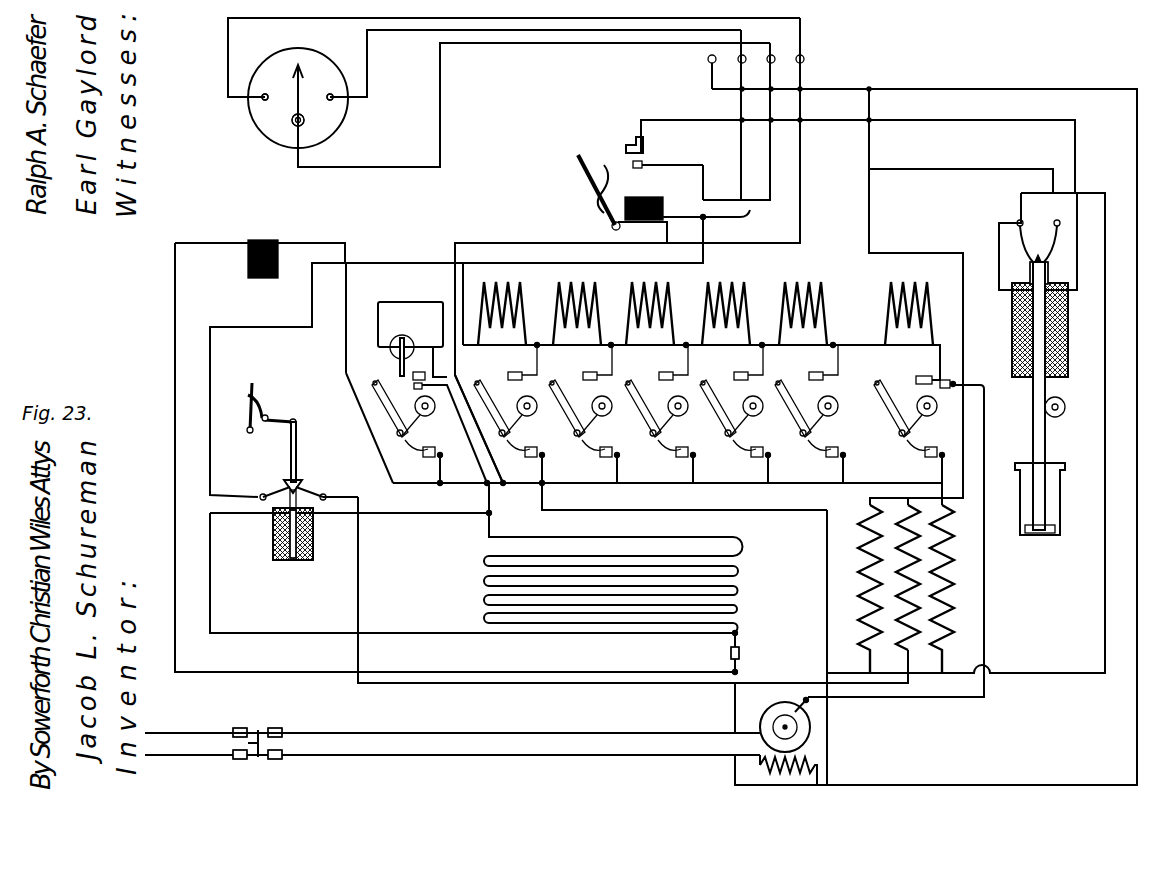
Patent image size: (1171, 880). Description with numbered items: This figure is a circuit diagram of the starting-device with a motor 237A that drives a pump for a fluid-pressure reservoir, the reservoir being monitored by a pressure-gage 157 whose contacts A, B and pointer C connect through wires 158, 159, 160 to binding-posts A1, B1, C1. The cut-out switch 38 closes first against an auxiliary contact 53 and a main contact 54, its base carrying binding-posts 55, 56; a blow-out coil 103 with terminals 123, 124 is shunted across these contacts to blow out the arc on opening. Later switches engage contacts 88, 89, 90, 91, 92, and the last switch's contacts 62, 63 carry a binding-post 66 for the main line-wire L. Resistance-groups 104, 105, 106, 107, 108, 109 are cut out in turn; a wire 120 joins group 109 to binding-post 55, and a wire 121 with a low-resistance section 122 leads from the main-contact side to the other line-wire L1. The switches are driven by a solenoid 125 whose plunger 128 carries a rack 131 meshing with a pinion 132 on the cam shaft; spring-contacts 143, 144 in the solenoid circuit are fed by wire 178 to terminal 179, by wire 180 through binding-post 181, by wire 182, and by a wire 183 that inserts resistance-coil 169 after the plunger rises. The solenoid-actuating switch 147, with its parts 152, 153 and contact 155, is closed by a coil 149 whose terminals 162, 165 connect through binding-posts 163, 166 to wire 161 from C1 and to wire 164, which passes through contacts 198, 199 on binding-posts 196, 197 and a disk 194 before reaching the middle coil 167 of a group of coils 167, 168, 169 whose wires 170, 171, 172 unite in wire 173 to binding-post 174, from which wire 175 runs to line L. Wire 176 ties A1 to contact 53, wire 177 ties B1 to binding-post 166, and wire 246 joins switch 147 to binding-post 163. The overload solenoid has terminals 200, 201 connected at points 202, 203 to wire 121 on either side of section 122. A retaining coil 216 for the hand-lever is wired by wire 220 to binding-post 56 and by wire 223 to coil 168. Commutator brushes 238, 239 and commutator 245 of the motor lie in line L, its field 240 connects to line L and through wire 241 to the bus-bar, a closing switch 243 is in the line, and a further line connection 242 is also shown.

The switch 38 is at (404, 424).
The auxiliary contact 53 is at (412, 376).
The main contact 54 is at (413, 385).
The binding-post 55 is at (443, 460).
The binding-post 56 is at (644, 385).
The contact 62 is at (905, 415).
The contact 63 is at (922, 376).
The binding-post 66 is at (952, 386).
The contact 88 is at (528, 374).
The contact 89 is at (602, 374).
The contact 90 is at (677, 374).
The contact 91 is at (752, 374).
The contact 92 is at (826, 375).
The blow-out coil 103 is at (400, 340).
The resistance-group 104 is at (893, 284).
The resistance-group 105 is at (795, 285).
The resistance-group 106 is at (722, 278).
The resistance-group 107 is at (648, 278).
The resistance-group 108 is at (575, 278).
The resistance-group 109 is at (497, 284).
The wire 120 is at (487, 420).
The wire 121 is at (466, 385).
The section 122 is at (645, 557).
The terminal 123 is at (433, 350).
The terminal 124 is at (425, 300).
The solenoid 125 is at (1069, 345).
The plunger 128 is at (1034, 418).
The rack 131 is at (1050, 440).
The pinion 132 is at (1064, 404).
The spring-contact 143 is at (1030, 230).
The spring-contact 144 is at (1052, 240).
The solenoid-actuating switch 147 is at (620, 189).
The magnet-coil 149 is at (645, 222).
The lever 152 is at (584, 150).
The contact 153 is at (643, 147).
The contact 155 is at (642, 165).
The pressure-gage 157 is at (288, 108).
The wire 158 is at (495, 20).
The wire 159 is at (420, 33).
The wire 160 is at (566, 46).
The wire 161 is at (771, 162).
The terminal 162 is at (703, 185).
The binding-post 163 is at (741, 195).
The wire 164 is at (708, 234).
The terminal 165 is at (692, 225).
The binding-post 166 is at (745, 211).
The resistance-coil 167 is at (938, 672).
The resistance-coil 168 is at (862, 592).
The resistance-coil 169 is at (952, 590).
The wire 170 is at (906, 512).
The wire 171 is at (872, 512).
The wire 172 is at (964, 501).
The wire 173 is at (870, 222).
The binding-post 174 is at (708, 64).
The wire 175 is at (980, 89).
The wire 176 is at (802, 192).
The wire 177 is at (741, 140).
The wire 178 is at (937, 114).
The terminal 179 is at (1060, 290).
The wire 180 is at (1000, 270).
The binding-post 181 is at (1017, 222).
The wire 182 is at (995, 169).
The wire 183 is at (1108, 285).
The disk 194 is at (300, 480).
The binding-post 196 is at (326, 495).
The binding-post 197 is at (262, 494).
The spring-pressed contact 198 is at (276, 490).
The spring-pressed contact 199 is at (308, 490).
The terminal 200 is at (258, 515).
The terminal 201 is at (351, 523).
The connection point 202 is at (735, 636).
The connection point 203 is at (671, 508).
The retaining coil 216 is at (265, 238).
The wire 220 is at (330, 243).
The wire 223 is at (175, 500).
The motor 237A is at (768, 715).
The commutator brush 238 is at (791, 696).
The commutator brush 239 is at (800, 742).
The field magnets 240 is at (822, 768).
The wire 241 is at (843, 729).
The wire 242 is at (968, 785).
The closing switch 243 is at (262, 730).
The commutator 245 is at (760, 738).
The wire 246 is at (673, 154).
The contact A is at (264, 93).
The contact B is at (331, 93).
The pointer C is at (298, 66).
The binding-post A1 is at (824, 54).
The binding-post B1 is at (738, 65).
The binding-post C1 is at (777, 56).
The main line-wire L is at (985, 553).
The main line-wire L1 is at (570, 734).